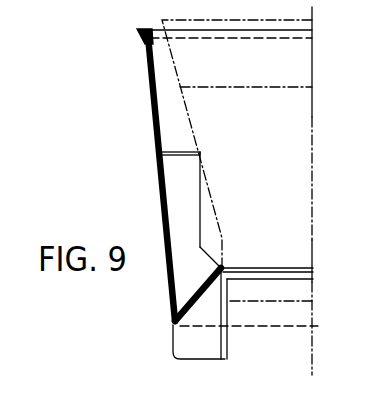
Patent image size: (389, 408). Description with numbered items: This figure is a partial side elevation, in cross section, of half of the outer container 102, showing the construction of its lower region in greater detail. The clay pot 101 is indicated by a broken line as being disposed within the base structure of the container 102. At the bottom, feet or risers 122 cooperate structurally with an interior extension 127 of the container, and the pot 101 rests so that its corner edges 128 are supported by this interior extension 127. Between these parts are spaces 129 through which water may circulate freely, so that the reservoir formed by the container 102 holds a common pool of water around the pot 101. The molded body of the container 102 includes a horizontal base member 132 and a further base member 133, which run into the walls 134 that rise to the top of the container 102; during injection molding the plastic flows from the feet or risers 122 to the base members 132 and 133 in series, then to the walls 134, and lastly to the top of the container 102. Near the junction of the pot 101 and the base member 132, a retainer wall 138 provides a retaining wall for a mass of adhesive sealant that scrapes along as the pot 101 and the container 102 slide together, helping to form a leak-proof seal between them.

The clay pot 101 is at (293, 148).
The container 102 is at (148, 30).
The feet or risers 122 is at (207, 345).
The interior extension 127 is at (177, 219).
The corner edges 128 is at (200, 154).
The spaces 129 is at (208, 247).
The base member 132 is at (299, 282).
The base member 133 is at (186, 300).
The walls 134 is at (162, 180).
The retainer wall 138 is at (292, 271).